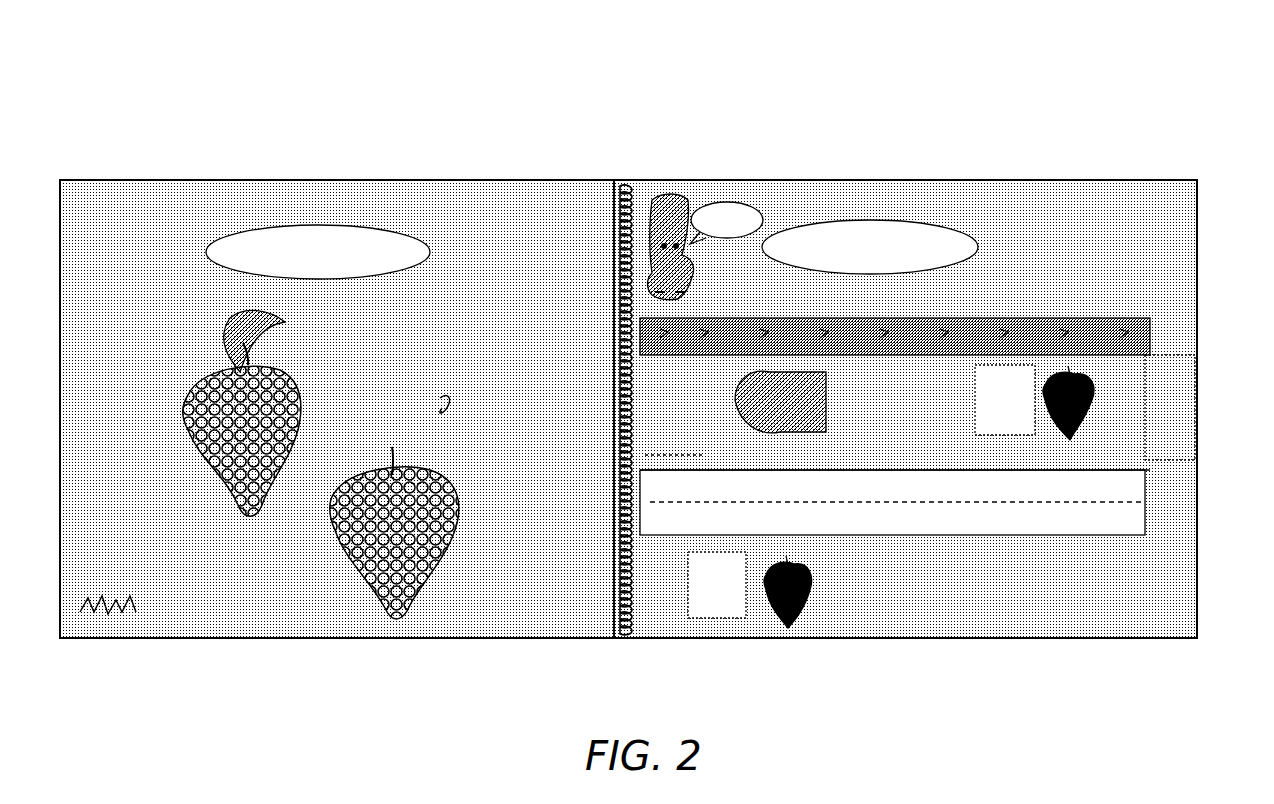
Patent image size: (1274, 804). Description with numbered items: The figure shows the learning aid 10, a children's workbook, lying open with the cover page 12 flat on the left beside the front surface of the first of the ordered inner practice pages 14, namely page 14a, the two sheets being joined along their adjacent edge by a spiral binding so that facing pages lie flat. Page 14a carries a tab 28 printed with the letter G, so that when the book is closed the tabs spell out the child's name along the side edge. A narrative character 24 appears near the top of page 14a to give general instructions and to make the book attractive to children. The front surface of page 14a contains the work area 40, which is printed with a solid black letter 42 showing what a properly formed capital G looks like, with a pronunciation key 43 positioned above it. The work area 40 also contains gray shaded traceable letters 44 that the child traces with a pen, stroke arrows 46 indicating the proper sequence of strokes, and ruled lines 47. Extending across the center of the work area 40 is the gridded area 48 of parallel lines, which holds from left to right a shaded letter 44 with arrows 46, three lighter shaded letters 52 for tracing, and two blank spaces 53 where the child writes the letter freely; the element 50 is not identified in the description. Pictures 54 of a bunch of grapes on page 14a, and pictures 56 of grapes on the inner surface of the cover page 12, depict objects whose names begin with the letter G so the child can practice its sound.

The learning aid 10 is at (82, 86).
The cover page 12 is at (152, 190).
The ordered inner practice pages 14 is at (478, 136).
The first inner practice page 14a is at (893, 197).
The narrative character 24 is at (665, 195).
The tab 28 is at (1188, 334).
The work area 40 is at (930, 385).
The solid black letter 42 is at (640, 380).
The pronunciation key 43 is at (680, 365).
The gray shaded traceable letters 44 is at (1005, 365).
The stroke arrows 46 is at (752, 600).
The ruled lines 47 is at (1035, 395).
The gridded area 48 is at (1068, 520).
The traceable letter 50 is at (855, 535).
The lighter shaded letters 52 is at (800, 527).
The blank spaces 53 is at (1008, 520).
The images or pictures 54 is at (1095, 390).
The images or pictures 56 is at (247, 512).